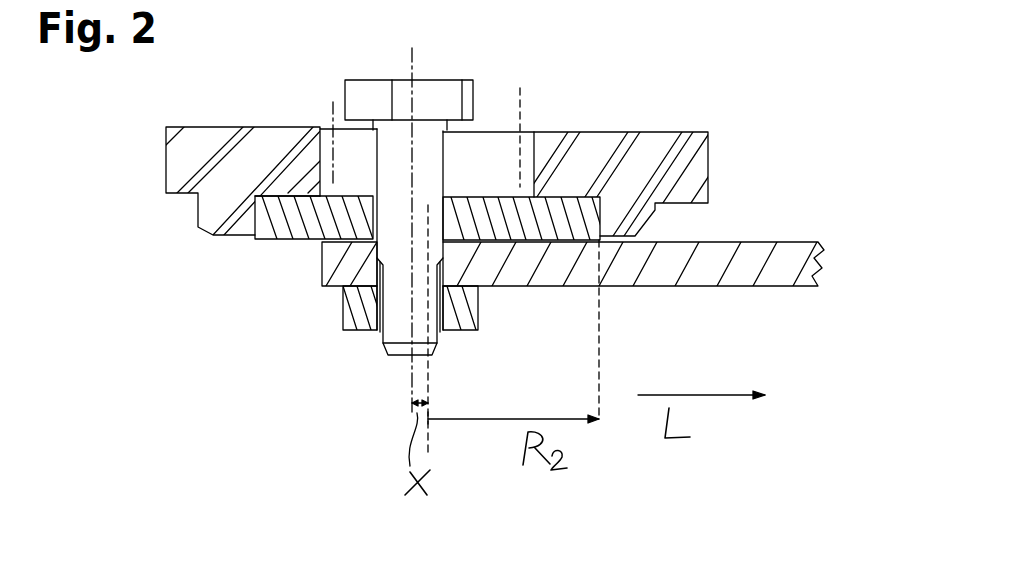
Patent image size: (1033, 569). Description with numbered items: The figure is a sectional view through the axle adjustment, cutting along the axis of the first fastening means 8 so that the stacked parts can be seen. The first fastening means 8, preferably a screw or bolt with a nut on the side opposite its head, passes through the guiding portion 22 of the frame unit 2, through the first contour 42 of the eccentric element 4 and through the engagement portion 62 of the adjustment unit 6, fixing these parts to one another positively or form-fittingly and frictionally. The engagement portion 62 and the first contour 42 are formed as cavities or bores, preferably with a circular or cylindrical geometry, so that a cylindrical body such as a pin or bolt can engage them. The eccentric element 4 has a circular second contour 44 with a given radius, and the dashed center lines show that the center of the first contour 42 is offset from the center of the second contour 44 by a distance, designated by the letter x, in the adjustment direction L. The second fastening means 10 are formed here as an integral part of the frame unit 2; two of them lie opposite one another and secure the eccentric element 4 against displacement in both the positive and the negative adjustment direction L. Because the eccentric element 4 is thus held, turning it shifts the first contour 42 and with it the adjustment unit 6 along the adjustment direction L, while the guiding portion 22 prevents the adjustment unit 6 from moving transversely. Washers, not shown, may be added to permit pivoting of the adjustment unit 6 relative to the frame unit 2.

The frame unit 2 is at (708, 131).
The eccentric element 4 is at (307, 223).
The adjustment unit 6 is at (780, 272).
The first fastening means 8 is at (374, 196).
The second fastening means 10 is at (812, 207).
The guiding portion 22 is at (690, 90).
The first contour 42 is at (611, 48).
The second contour 44 is at (218, 320).
The engagement portion 62 is at (340, 460).